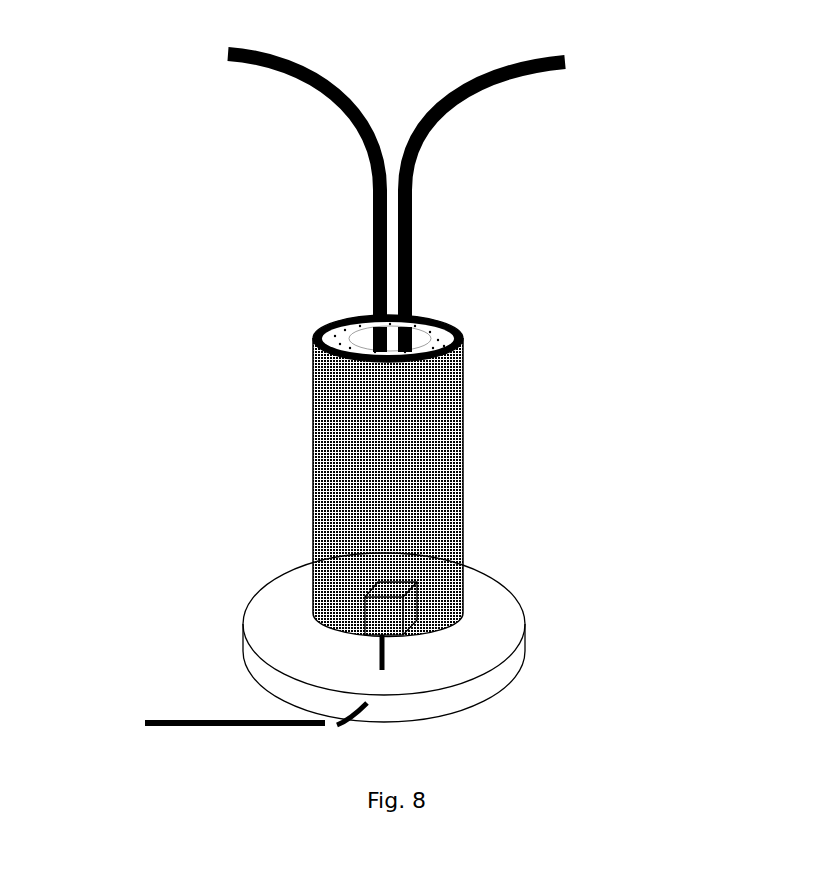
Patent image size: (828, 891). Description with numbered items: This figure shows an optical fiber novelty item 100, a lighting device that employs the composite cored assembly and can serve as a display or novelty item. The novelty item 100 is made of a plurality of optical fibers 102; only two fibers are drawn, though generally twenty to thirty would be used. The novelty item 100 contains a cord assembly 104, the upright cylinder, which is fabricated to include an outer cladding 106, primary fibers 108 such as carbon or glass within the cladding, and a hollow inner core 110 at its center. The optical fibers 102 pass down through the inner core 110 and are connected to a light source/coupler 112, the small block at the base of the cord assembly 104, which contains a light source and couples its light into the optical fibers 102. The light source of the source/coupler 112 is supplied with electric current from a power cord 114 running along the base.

The optical fiber novelty item 100 is at (728, 324).
The optical fibers 102 is at (450, 97).
The cord assembly 104 is at (395, 428).
The cladding 106 is at (442, 477).
The primary fibers 108 is at (447, 322).
The hollow inner core 110 is at (362, 345).
The light source/coupler 112 is at (410, 605).
The power cord 114 is at (173, 718).